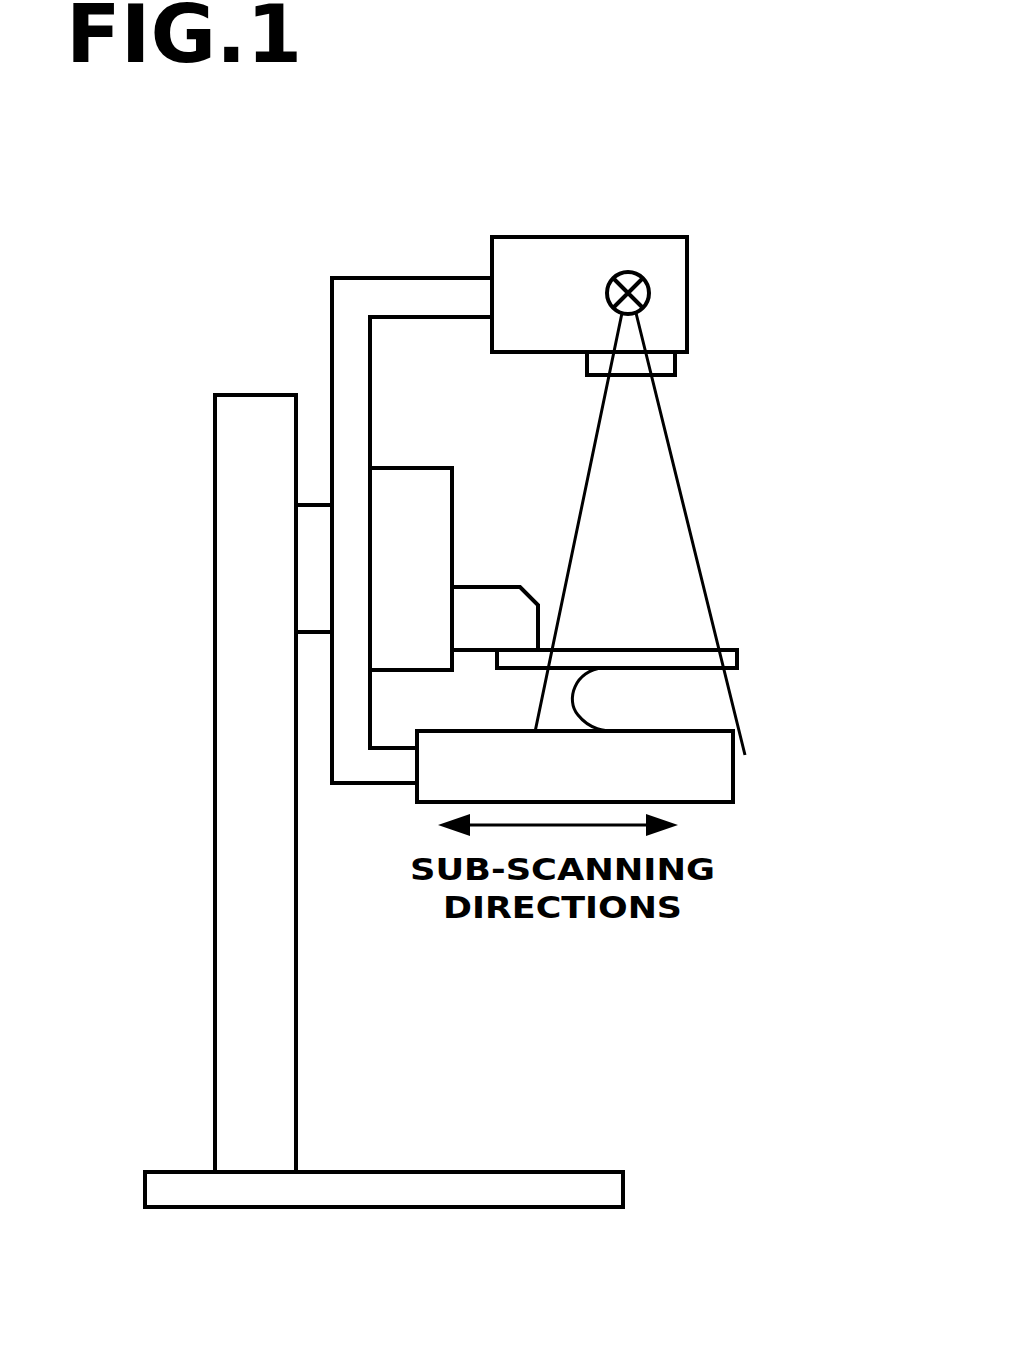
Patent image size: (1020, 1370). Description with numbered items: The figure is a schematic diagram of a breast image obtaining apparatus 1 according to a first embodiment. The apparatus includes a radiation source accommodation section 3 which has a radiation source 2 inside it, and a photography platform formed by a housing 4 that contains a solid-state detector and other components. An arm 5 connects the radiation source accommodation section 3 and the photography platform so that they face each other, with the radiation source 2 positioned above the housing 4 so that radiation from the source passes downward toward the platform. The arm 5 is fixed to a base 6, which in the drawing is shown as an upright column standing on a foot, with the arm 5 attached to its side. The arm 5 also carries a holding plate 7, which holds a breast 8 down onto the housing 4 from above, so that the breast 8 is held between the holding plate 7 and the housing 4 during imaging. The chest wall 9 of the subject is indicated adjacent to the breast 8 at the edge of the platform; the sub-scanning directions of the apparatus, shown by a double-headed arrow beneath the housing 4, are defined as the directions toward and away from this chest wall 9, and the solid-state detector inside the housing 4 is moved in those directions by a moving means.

The breast image obtaining apparatus 1 is at (697, 96).
The radiation source 2 is at (632, 270).
The radiation source accommodation section 3 is at (690, 320).
The housing 4 is at (688, 782).
The arm 5 is at (405, 287).
The base 6 is at (258, 407).
The holding plate 7 is at (732, 650).
The breast 8 is at (607, 697).
The chest wall 9 is at (752, 758).